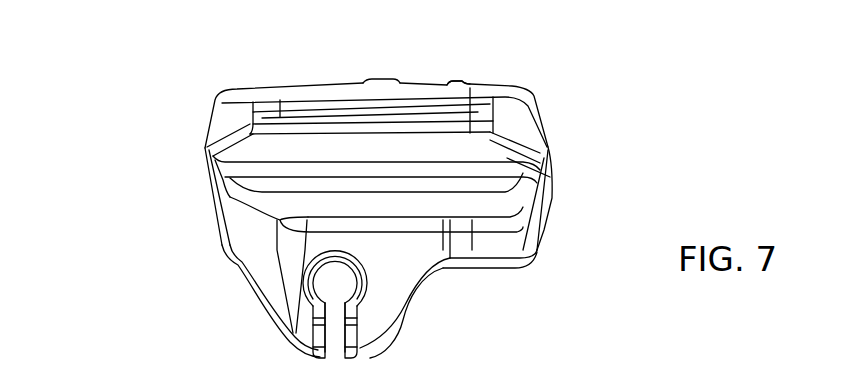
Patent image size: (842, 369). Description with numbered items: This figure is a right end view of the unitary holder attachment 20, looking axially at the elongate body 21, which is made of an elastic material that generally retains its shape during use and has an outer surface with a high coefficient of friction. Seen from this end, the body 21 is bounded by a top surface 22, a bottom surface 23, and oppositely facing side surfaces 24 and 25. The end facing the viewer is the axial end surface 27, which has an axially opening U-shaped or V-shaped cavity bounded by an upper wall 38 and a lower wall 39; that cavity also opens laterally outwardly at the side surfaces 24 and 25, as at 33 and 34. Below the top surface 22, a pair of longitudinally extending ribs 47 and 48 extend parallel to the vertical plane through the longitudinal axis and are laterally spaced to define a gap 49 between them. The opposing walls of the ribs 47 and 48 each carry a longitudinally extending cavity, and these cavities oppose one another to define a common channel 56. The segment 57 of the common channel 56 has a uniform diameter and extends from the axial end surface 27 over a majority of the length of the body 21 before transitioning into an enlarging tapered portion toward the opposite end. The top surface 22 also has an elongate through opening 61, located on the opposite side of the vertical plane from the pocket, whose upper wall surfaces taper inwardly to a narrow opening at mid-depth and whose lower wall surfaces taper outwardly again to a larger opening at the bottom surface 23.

The unitary holder attachment 20 is at (547, 85).
The elongate body 21 is at (547, 122).
The top surface 22 is at (490, 83).
The bottom surface 23 is at (493, 270).
The side surface 24 is at (207, 193).
The side surface 25 is at (555, 177).
The axial end surface 27 is at (244, 243).
The lateral opening 33 is at (529, 163).
The lateral opening 34 is at (216, 153).
The upper wall 38 is at (340, 137).
The lower wall 39 is at (427, 203).
The rib 47 is at (298, 328).
The rib 48 is at (370, 338).
The gap 49 is at (335, 348).
The common channel 56 is at (337, 283).
The segment 57 is at (328, 274).
The through opening 61 is at (420, 80).